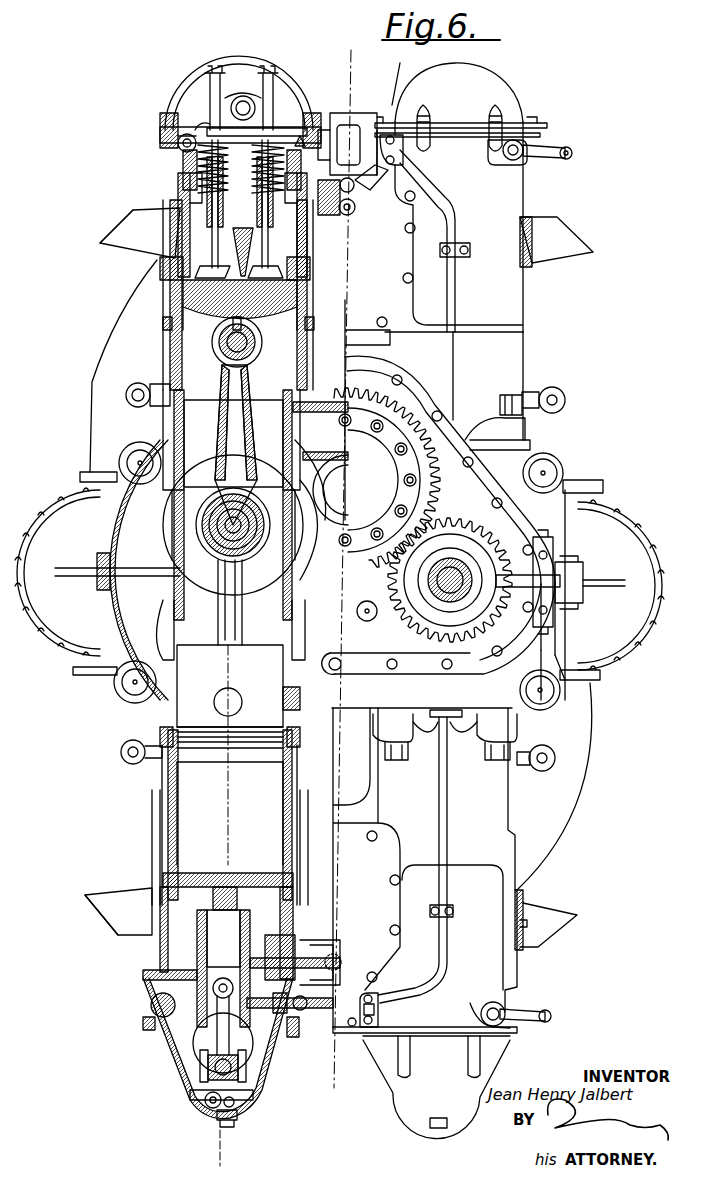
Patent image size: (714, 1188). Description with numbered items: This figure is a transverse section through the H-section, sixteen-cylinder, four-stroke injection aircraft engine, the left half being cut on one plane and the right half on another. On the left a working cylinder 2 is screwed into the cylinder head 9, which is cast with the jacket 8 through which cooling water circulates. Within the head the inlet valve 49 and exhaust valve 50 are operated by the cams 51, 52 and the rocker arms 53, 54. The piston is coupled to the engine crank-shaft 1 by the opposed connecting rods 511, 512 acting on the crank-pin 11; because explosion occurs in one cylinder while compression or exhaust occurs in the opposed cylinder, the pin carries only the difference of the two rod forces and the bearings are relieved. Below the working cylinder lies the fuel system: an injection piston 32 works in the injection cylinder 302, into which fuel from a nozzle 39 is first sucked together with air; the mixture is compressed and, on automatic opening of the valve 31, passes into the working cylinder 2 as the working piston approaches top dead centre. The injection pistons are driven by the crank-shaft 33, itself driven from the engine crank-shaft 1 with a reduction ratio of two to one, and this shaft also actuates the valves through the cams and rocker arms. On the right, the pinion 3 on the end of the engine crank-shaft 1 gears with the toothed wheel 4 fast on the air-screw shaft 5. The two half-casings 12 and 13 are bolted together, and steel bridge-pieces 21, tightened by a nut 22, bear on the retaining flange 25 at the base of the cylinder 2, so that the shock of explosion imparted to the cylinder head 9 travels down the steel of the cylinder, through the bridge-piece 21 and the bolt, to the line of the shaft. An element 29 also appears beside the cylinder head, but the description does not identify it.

The engine crank-shaft 1 is at (195, 572).
The crank-pin 11 is at (185, 530).
The working cylinder 2 is at (190, 805).
The pinion 3 is at (497, 545).
The toothed wheel 4 is at (403, 403).
The air-screw shaft 5 is at (344, 440).
The jacket 8 is at (510, 196).
The cylinder head 9 is at (155, 846).
The half-casing 12 is at (548, 630).
The half-casing 13 is at (500, 470).
The steel bridge-piece 21 is at (505, 430).
The nut 22 is at (522, 392).
The retaining flange 25 is at (522, 446).
The carburetor 29 is at (345, 140).
The injection cylinder 302 is at (205, 930).
The valve 31 is at (228, 879).
The injection piston 32 is at (158, 984).
The crank-shaft 33 is at (200, 1048).
The nozzle 39 is at (315, 942).
The inlet valve 49 is at (265, 244).
The exhaust valve 50 is at (165, 250).
The cam 51 is at (213, 118).
The connecting rod 511 is at (222, 420).
The connecting rod 512 is at (195, 624).
The cam 52 is at (268, 126).
The rocker arm 53 is at (283, 128).
The rocker arm 54 is at (243, 96).